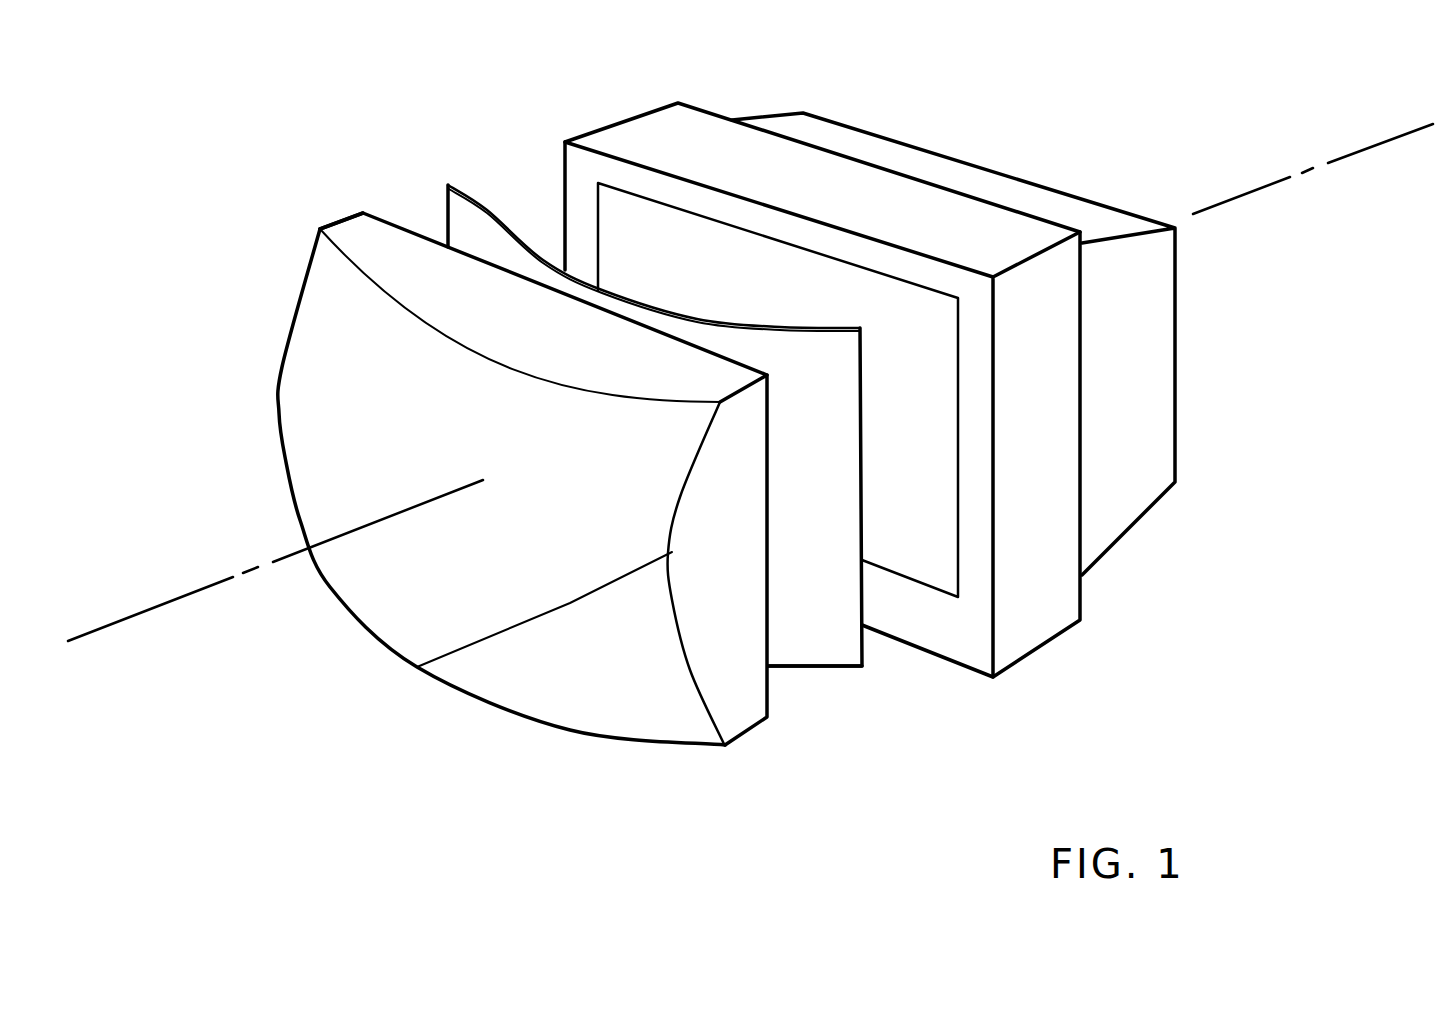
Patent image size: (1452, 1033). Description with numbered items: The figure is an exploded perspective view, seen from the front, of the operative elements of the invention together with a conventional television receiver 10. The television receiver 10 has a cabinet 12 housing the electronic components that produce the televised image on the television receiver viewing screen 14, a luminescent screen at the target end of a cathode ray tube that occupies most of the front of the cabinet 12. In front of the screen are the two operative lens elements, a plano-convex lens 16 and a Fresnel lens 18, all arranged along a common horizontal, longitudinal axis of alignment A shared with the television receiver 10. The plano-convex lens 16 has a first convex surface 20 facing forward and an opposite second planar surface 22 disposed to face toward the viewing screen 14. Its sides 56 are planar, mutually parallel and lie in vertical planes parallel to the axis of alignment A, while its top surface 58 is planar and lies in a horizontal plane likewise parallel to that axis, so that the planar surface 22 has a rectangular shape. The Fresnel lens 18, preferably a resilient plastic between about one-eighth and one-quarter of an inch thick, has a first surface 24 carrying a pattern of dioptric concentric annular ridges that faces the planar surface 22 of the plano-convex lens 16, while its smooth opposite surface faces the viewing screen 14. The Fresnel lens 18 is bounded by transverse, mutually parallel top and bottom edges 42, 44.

The television receiver 10 is at (1028, 588).
The cabinet 12 is at (1138, 410).
The television receiver viewing screen 14 is at (642, 247).
The plano-convex lens 16 is at (465, 488).
The Fresnel lens 18 is at (679, 474).
The first convex surface 20 is at (330, 485).
The second planar surface 22 is at (388, 220).
The first surface 24 is at (790, 637).
The top edge 42 is at (485, 213).
The bottom edge 44 is at (813, 667).
The sides 56 is at (417, 667).
The top surface 58 is at (393, 263).
The axis of alignment A is at (133, 618).